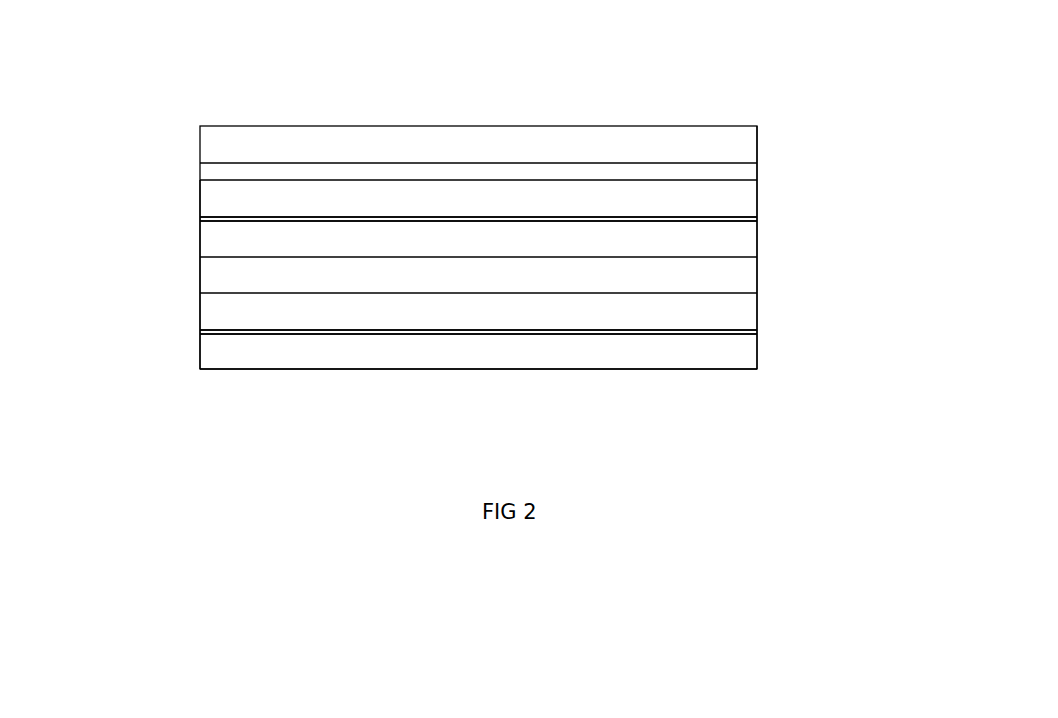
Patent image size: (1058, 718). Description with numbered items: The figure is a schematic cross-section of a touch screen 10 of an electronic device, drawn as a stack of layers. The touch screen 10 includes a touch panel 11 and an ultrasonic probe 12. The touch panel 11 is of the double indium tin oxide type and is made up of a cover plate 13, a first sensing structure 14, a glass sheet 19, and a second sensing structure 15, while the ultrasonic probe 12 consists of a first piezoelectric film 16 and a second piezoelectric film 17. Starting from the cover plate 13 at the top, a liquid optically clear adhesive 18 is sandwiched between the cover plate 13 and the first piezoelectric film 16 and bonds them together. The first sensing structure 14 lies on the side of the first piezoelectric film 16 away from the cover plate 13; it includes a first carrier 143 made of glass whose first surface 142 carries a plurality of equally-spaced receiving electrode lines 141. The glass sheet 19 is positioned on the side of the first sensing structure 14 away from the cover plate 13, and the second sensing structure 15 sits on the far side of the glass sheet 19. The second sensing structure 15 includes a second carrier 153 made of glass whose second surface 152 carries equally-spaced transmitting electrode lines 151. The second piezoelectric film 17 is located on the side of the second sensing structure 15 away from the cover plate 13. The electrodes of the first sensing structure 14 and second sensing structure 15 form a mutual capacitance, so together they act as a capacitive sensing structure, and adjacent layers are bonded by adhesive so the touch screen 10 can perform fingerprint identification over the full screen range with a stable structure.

The touch screen 10 is at (499, 50).
The touch panel 11 is at (912, 138).
The ultrasonic probe 12 is at (120, 353).
The cover plate 13 is at (745, 147).
The first sensing structure 14 is at (845, 249).
The second sensing structure 15 is at (845, 338).
The first piezoelectric film 16 is at (230, 196).
The second piezoelectric film 17 is at (222, 352).
The liquid optically clear adhesive 18 is at (682, 170).
The glass sheet 19 is at (717, 273).
The receiving electrode lines 141 is at (717, 219).
The first surface 142 is at (295, 210).
The first carrier 143 is at (717, 238).
The transmitting electrode lines 151 is at (717, 331).
The second surface 152 is at (294, 342).
The second carrier 153 is at (717, 309).